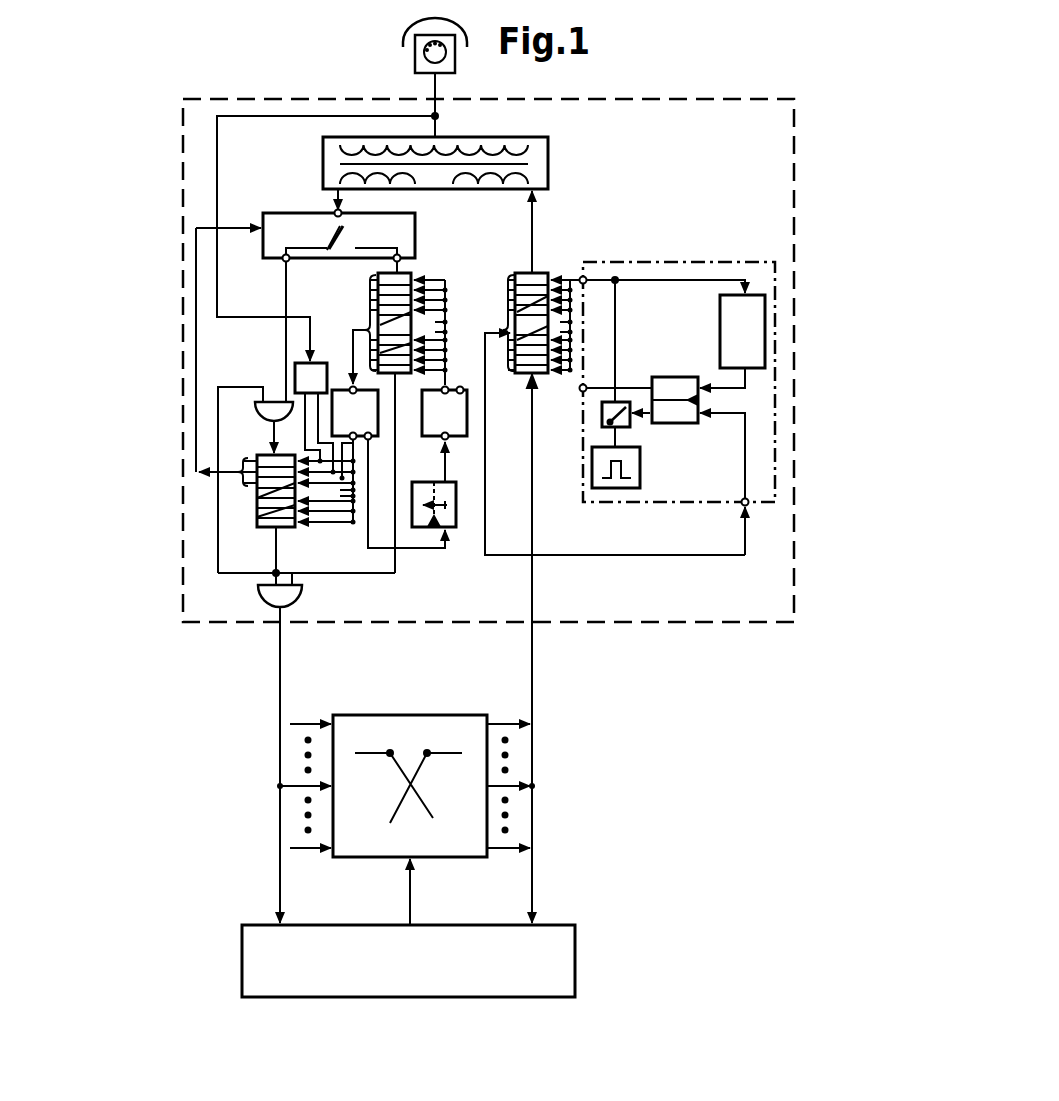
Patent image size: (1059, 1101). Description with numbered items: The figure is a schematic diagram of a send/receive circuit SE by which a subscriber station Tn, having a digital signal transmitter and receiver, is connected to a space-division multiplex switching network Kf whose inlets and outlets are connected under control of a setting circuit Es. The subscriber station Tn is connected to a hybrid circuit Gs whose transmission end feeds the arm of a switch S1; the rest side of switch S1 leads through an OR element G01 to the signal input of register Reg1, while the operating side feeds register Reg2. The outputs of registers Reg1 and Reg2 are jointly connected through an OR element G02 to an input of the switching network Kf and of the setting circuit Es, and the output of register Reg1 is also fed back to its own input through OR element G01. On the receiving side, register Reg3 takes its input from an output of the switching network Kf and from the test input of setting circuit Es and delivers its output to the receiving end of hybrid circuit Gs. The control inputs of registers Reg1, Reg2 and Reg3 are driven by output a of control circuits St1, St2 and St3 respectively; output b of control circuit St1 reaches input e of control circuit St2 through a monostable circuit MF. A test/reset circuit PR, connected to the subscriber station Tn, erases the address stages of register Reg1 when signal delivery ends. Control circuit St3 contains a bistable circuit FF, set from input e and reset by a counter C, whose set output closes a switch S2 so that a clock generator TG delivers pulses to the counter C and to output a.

The subscriber station Tn is at (415, 46).
The send/receive circuit SE is at (786, 78).
The hybrid circuit Gs is at (548, 138).
The switch S1 is at (297, 210).
The register Reg1 is at (258, 515).
The register Reg2 is at (420, 270).
The register Reg3 is at (548, 266).
The control circuit St1 is at (342, 386).
The control circuit St2 is at (460, 386).
The control circuit St3 is at (670, 319).
The test/reset circuit PR is at (295, 376).
The OR element G01 is at (258, 420).
The OR element G02 is at (303, 590).
The monostable circuit MF is at (444, 480).
The counter C is at (720, 330).
The bistable circuit FF is at (675, 387).
The switch S2 is at (633, 424).
The clock generator TG is at (641, 470).
The switching network Kf is at (437, 720).
The setting circuit Es is at (458, 990).